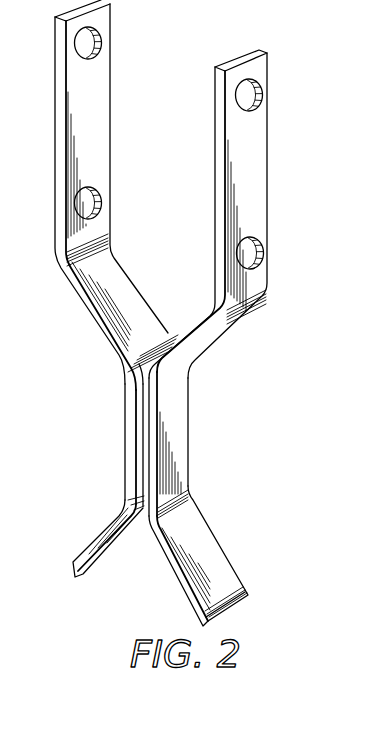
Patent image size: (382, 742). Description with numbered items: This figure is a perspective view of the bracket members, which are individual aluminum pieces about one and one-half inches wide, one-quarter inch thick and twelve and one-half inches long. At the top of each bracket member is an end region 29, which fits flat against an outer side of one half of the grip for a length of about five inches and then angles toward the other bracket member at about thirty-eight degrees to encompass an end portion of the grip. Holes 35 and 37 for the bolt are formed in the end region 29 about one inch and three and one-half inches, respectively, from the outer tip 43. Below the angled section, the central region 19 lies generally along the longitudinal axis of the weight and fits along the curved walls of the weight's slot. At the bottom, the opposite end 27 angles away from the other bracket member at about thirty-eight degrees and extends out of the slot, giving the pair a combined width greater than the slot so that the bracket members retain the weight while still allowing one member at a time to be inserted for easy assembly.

The central region 19 is at (186, 443).
The opposite end 27 is at (215, 538).
The end region 29 is at (231, 191).
The hole 35 is at (259, 107).
The hole 37 is at (263, 258).
The outer tip 43 is at (240, 55).